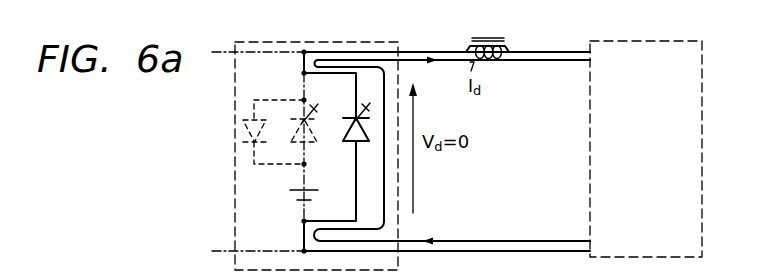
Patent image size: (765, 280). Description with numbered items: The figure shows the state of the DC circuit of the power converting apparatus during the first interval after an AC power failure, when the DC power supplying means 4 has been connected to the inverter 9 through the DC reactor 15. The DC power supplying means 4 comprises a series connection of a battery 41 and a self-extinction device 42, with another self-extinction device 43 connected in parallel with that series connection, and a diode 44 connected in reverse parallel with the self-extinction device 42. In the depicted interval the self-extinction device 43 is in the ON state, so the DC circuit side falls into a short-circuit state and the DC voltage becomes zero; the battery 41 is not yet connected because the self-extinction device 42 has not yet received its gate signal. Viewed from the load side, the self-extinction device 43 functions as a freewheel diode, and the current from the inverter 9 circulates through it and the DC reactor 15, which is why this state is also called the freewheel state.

The DC power supplying means 4 is at (283, 42).
The inverter 9 is at (660, 41).
The DC reactor 15 is at (483, 40).
The battery 41 is at (292, 197).
The self-extinction device 42 is at (299, 122).
The self-extinction device 43 is at (347, 133).
The diode 44 is at (249, 133).